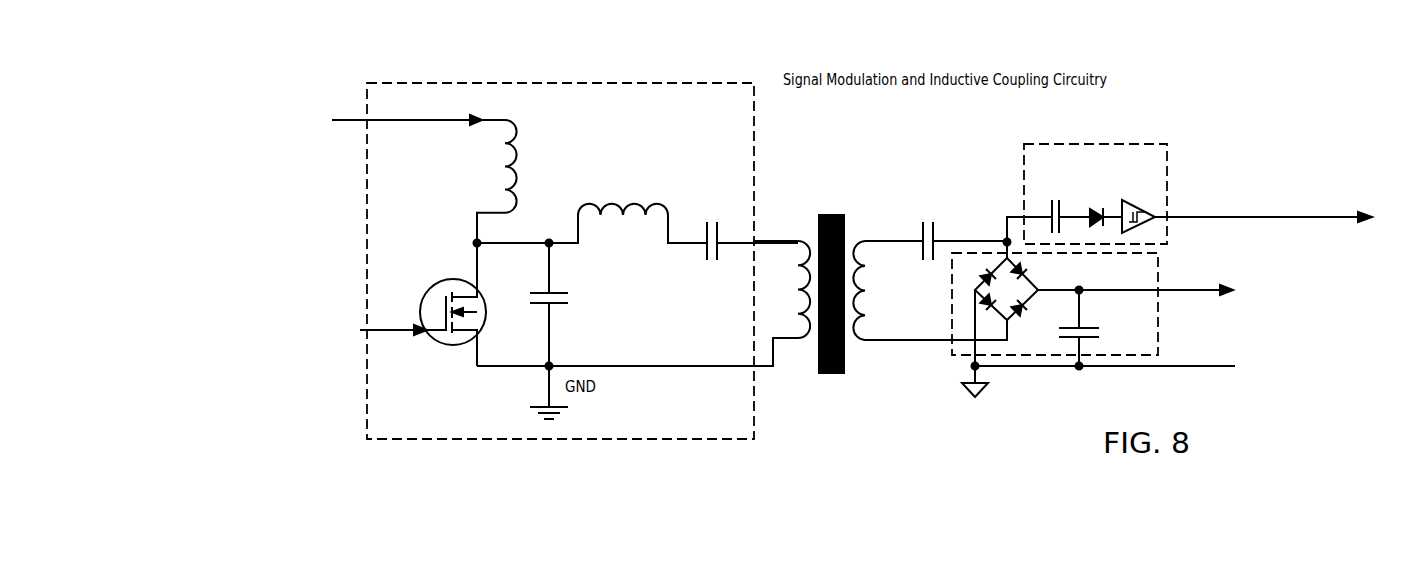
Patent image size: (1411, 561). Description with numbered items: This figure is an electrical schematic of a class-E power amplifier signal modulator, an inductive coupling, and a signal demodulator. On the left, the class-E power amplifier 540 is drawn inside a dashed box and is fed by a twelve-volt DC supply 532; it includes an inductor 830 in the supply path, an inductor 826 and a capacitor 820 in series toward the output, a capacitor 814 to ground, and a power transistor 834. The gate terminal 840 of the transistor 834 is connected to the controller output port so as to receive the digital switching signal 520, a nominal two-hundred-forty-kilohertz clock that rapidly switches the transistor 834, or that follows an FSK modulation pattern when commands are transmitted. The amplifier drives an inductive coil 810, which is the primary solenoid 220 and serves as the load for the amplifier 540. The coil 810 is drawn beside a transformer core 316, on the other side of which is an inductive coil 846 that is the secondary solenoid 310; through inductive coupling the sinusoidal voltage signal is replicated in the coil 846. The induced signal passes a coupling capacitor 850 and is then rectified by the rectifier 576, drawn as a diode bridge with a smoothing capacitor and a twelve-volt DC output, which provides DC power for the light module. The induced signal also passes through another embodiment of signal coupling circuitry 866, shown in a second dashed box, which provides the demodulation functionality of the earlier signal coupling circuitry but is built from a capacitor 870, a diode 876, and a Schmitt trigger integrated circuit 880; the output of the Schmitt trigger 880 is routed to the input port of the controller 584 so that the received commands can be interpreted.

The class-E power amplifier 540 is at (418, 82).
The 12 Vdc supply input 532 is at (390, 129).
The inductor 830 is at (516, 156).
The inductor 826 is at (581, 207).
The capacitor 820 is at (708, 218).
The power transistor 834 is at (457, 278).
The digital switching signal 520 is at (371, 331).
The gate terminal 840 is at (427, 335).
The capacitor 814 is at (561, 294).
The inductive coil 810 is at (781, 242).
The primary solenoid 220 is at (784, 217).
The transformer core 316 is at (846, 364).
The secondary solenoid 310 is at (864, 217).
The inductive coil 846 is at (866, 270).
The coupling capacitor 850 is at (964, 229).
The rectifier 576 is at (951, 278).
The signal coupling circuitry 866 is at (1168, 144).
The capacitor 870 is at (1050, 199).
The diode 876 is at (1090, 210).
The Schmitt trigger integrated circuit 880 is at (1124, 201).
The controller 584 is at (1273, 227).